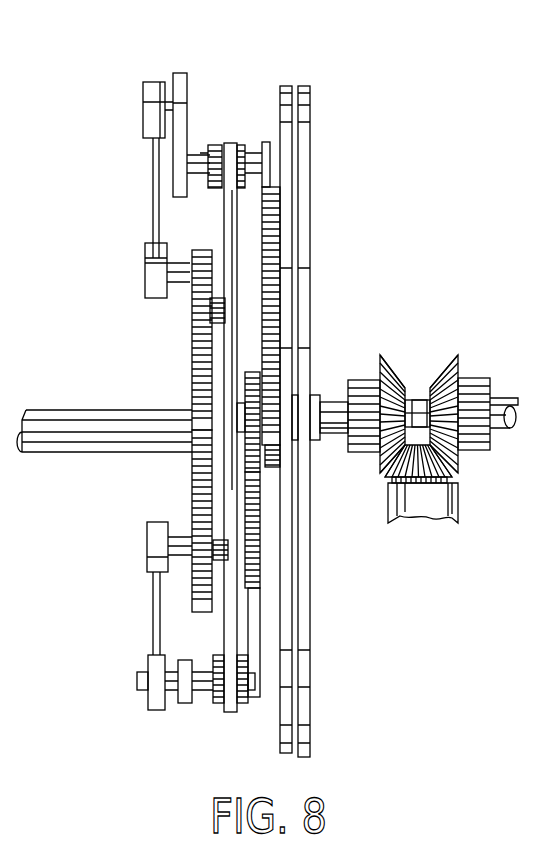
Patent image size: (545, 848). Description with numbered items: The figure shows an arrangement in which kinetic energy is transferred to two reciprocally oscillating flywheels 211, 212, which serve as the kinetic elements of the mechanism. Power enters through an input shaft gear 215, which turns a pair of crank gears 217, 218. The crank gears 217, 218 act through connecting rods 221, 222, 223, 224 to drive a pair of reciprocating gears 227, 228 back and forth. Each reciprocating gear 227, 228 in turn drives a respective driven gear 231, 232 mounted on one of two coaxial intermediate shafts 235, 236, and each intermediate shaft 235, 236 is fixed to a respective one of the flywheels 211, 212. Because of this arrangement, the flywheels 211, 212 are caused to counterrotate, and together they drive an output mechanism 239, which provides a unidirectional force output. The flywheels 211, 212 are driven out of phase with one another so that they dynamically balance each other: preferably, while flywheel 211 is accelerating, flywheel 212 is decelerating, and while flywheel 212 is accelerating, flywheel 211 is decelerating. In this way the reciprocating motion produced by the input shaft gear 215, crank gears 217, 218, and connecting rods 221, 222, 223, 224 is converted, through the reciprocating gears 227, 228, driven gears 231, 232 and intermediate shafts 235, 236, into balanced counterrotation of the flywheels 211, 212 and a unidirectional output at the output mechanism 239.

The flywheel 211 is at (282, 86).
The flywheel 212 is at (306, 86).
The input shaft gear 215 is at (190, 400).
The crank gear 217 is at (190, 310).
The crank gear 218 is at (190, 508).
The connecting rod 221 is at (152, 175).
The connecting rod 222 is at (156, 630).
The connecting rod 223 is at (180, 73).
The connecting rod 224 is at (187, 703).
The reciprocating gear 227 is at (272, 240).
The reciprocating gear 228 is at (258, 522).
The driven gear 231 is at (267, 470).
The driven gear 232 is at (247, 405).
The intermediate shaft 235 is at (425, 400).
The intermediate shaft 236 is at (332, 433).
The output mechanism 239 is at (466, 455).